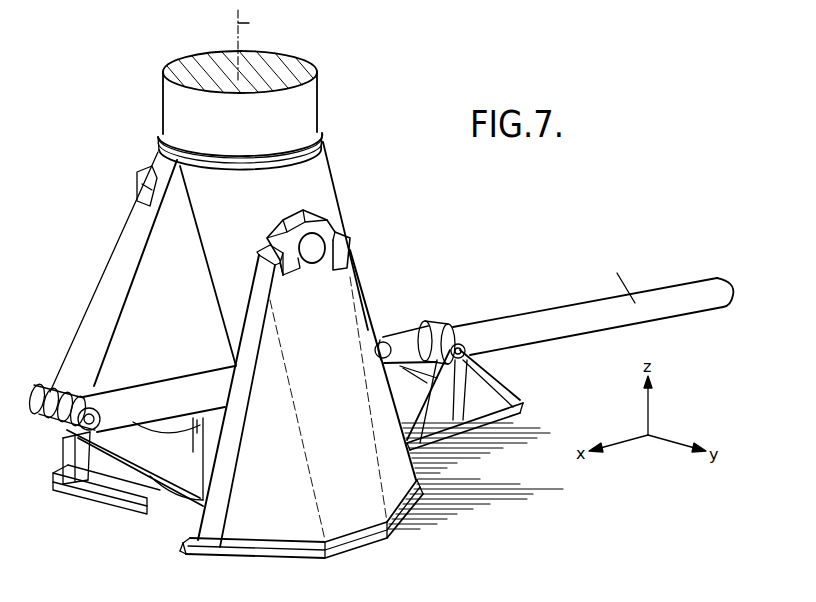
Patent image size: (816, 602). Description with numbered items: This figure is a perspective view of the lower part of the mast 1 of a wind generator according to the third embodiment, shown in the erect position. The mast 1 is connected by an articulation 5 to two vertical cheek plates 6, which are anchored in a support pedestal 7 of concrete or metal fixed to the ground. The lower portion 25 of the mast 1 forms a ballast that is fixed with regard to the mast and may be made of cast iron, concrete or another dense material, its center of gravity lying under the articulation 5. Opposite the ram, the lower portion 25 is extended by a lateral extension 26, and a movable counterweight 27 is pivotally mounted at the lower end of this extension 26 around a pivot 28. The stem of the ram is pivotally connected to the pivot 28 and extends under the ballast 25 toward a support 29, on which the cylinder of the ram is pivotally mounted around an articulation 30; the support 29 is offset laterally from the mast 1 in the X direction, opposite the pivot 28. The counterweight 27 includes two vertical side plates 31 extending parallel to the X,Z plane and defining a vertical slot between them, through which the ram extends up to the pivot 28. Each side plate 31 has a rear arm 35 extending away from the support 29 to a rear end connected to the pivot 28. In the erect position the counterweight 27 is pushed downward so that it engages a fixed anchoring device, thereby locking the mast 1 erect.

The mast 1 is at (278, 72).
The lower portion of the mast 25 is at (290, 193).
The lateral extension 26 is at (117, 278).
The pivot 28 is at (86, 414).
The articulation 30 is at (462, 348).
The support 29 is at (473, 385).
The vertical cheek plates 6 is at (77, 460).
The articulation 5 is at (312, 248).
The rear arm 35 is at (62, 492).
The vertical side plates 31 is at (155, 480).
The movable counterweight 27 is at (176, 508).
The support pedestal 7 is at (471, 491).